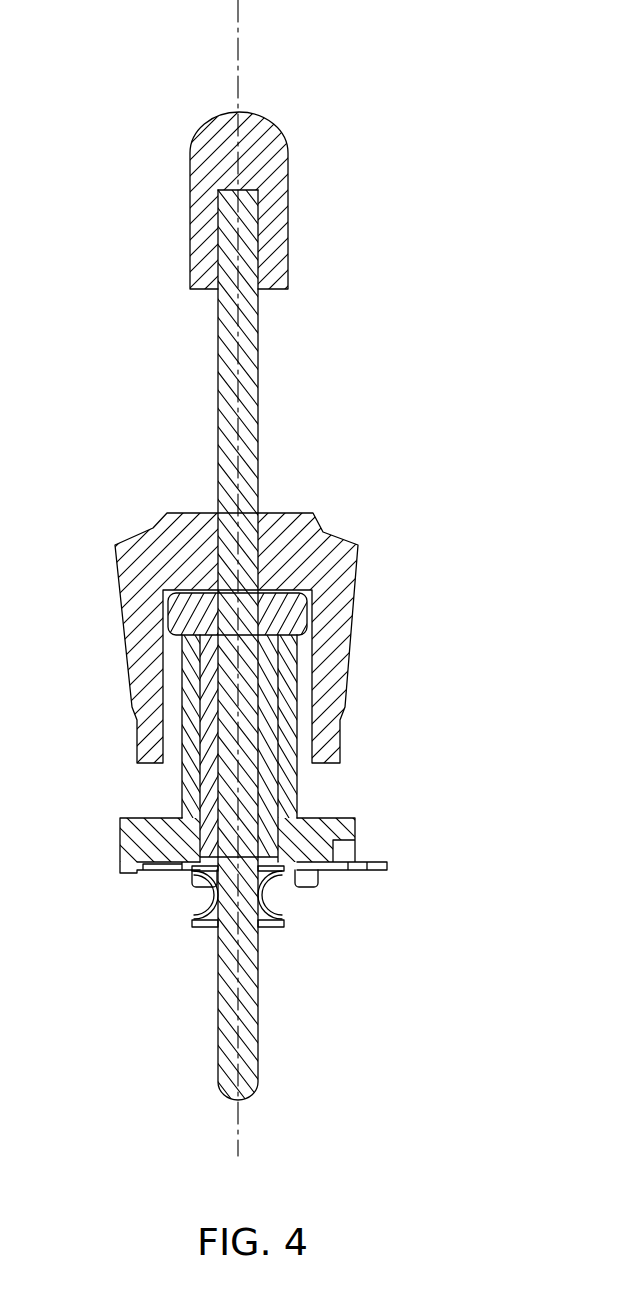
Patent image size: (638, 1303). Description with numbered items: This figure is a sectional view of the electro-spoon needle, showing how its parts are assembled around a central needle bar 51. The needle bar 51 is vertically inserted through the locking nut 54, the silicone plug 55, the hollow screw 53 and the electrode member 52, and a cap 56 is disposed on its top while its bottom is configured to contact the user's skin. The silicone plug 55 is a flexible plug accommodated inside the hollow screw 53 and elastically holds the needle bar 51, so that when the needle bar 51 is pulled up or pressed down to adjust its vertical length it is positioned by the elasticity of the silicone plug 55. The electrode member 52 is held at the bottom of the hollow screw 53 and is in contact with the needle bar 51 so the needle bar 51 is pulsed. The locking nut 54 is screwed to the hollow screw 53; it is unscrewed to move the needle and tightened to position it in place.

The needle bar 51 is at (252, 377).
The electrode member 52 is at (282, 925).
The hollow screw 53 is at (280, 826).
The locking nut 54 is at (333, 615).
The silicone plug 55 is at (265, 702).
The cap 56 is at (277, 196).